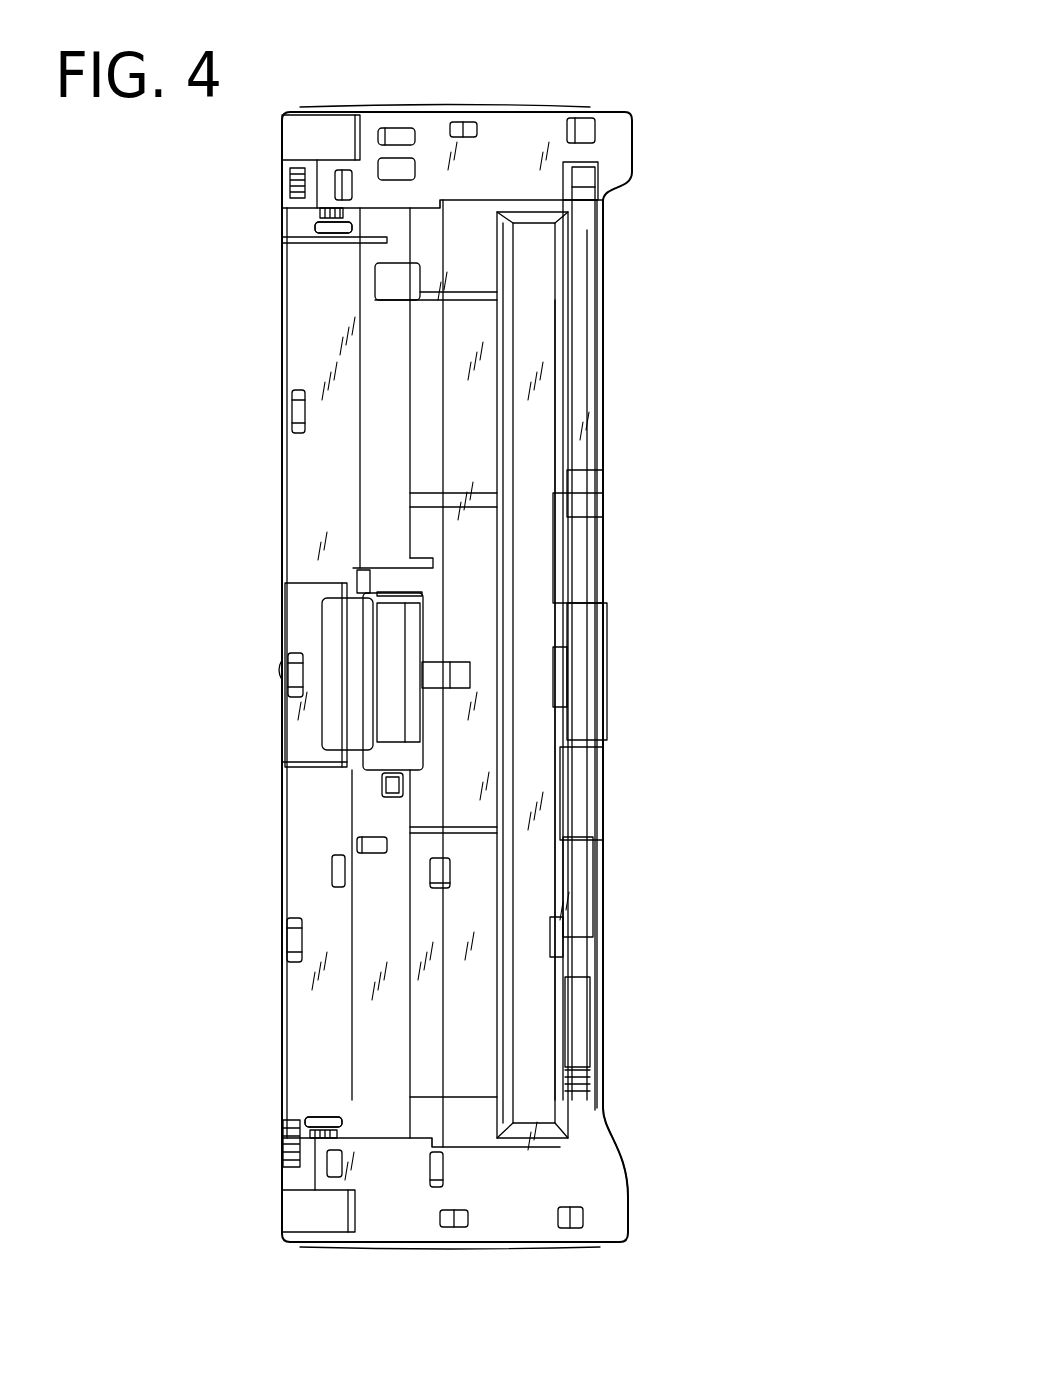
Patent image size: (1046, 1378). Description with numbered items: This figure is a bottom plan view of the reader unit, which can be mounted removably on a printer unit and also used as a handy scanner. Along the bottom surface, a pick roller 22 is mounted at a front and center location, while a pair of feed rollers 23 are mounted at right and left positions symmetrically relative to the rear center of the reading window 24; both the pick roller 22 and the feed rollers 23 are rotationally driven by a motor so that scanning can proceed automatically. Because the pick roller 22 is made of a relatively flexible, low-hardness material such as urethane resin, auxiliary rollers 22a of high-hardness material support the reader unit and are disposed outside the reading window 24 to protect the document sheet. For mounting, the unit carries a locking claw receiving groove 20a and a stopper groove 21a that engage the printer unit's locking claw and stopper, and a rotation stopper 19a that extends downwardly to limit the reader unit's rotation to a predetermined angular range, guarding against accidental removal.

The rotation stopper 19a is at (610, 147).
The locking claw receiving groove 20a is at (300, 133).
The stopper groove 21a is at (508, 1283).
The pick roller 22 is at (397, 672).
The auxiliary rollers 22a is at (283, 229).
The feed rollers 23 is at (590, 563).
The reading window 24 is at (537, 367).